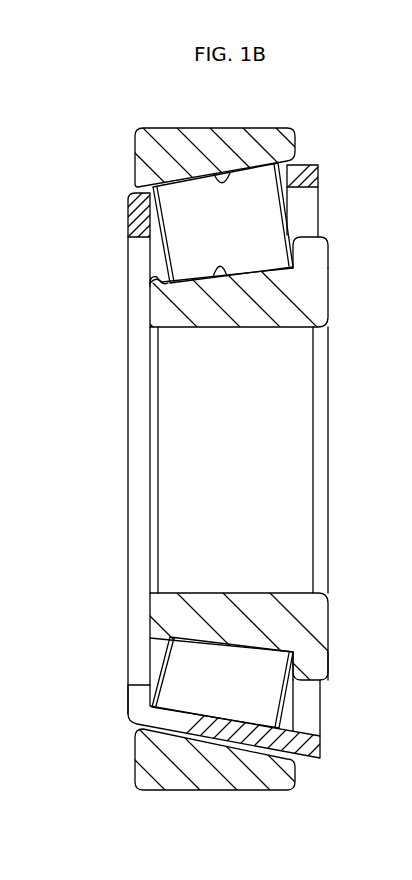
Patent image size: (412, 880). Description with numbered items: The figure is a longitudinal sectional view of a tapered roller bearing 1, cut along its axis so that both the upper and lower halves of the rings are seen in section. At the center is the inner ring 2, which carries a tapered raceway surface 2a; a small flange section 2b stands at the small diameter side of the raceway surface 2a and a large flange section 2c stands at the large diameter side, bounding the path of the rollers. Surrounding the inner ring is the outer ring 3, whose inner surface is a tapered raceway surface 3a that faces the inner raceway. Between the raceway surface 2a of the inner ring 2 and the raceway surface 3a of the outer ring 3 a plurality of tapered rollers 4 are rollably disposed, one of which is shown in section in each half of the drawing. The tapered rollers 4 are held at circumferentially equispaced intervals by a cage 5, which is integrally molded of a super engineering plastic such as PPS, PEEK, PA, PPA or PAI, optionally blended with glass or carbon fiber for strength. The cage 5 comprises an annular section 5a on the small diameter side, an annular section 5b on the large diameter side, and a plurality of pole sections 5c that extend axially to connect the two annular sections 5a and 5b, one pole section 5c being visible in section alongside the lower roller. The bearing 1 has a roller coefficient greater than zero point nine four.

The tapered roller bearing 1 is at (326, 131).
The inner ring 2 is at (302, 287).
The raceway surface 2a is at (222, 268).
The small flange section 2b is at (153, 280).
The large flange section 2c is at (313, 248).
The outer ring 3 is at (168, 137).
The raceway surface 3a is at (222, 174).
The tapered roller 4 is at (275, 232).
The cage 5 is at (124, 203).
The annular section on the small diameter side 5a is at (137, 226).
The annular section on the large diameter side 5b is at (313, 171).
The pole section 5c is at (232, 738).